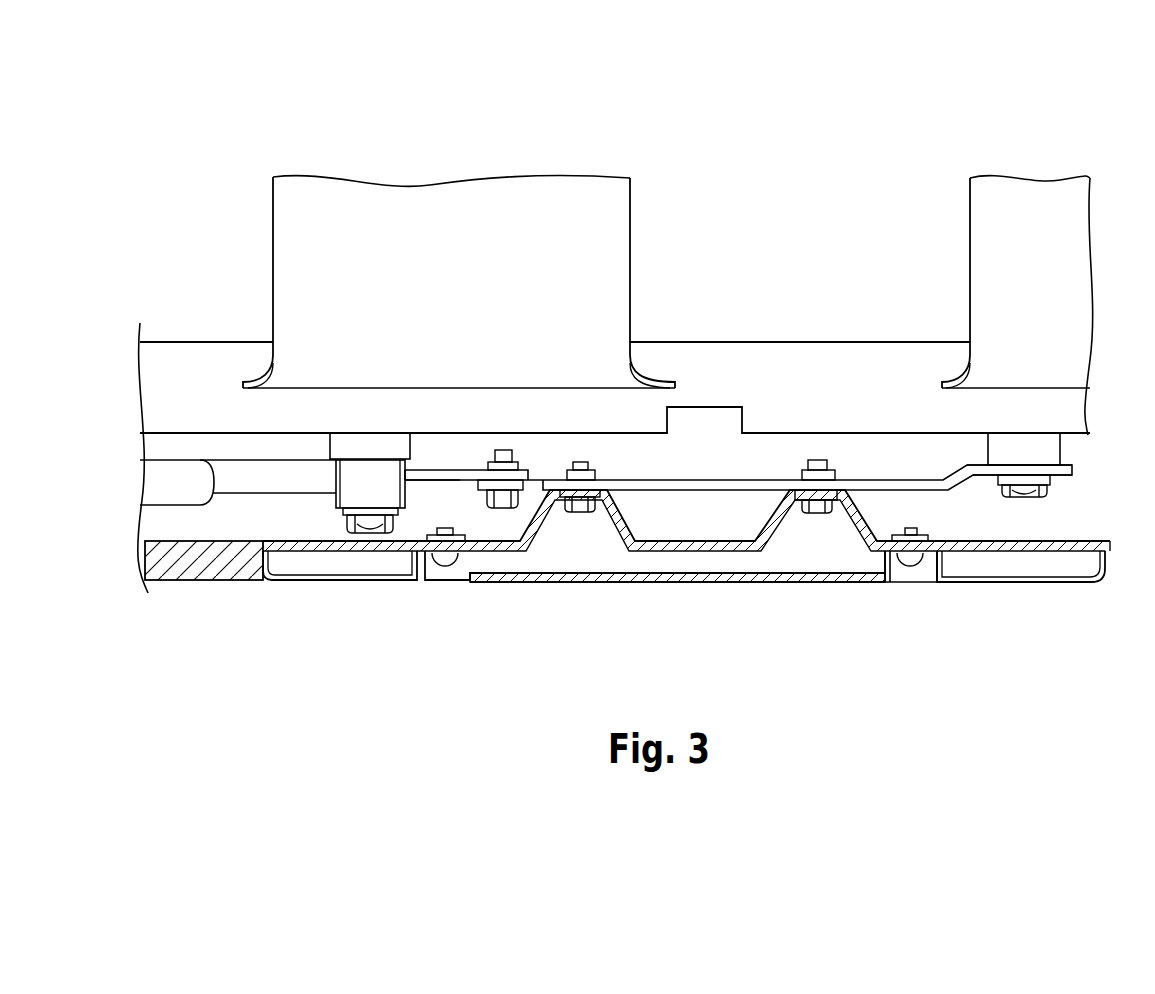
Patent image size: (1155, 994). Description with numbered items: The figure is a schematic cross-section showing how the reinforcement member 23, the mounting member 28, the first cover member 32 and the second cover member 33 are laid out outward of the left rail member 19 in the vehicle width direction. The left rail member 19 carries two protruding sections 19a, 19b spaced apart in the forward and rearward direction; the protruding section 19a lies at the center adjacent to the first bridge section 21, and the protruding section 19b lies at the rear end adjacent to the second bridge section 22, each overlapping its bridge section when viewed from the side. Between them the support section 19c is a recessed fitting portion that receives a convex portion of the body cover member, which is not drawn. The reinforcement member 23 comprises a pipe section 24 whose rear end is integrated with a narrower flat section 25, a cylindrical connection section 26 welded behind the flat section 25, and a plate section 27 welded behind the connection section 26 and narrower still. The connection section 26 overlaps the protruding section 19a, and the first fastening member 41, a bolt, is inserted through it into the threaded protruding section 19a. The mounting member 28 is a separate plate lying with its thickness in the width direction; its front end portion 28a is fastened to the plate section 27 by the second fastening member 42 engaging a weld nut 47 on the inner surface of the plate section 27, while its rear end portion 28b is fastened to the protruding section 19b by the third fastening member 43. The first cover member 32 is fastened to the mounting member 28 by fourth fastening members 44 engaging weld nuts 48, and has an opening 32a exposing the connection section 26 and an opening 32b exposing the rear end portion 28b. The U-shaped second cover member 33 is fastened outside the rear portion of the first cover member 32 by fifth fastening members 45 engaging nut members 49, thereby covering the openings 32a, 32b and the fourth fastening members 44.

The left rail member 19 is at (918, 353).
The protruding section 19a is at (358, 443).
The protruding section 19b is at (1015, 445).
The support section 19c is at (730, 407).
The first bridge section 21 is at (452, 213).
The second bridge section 22 is at (1035, 215).
The reinforcement member 23 is at (238, 448).
The pipe section 24 is at (185, 470).
The flat section 25 is at (312, 470).
The connection section 26 is at (375, 480).
The plate section 27 is at (457, 473).
The mounting member 28 is at (701, 470).
The front end portion 28a is at (547, 473).
The rear end portion 28b is at (1035, 470).
The first cover member 32 is at (680, 560).
The opening 32a is at (347, 572).
The opening 32b is at (1030, 555).
The second cover member 33 is at (638, 584).
The first fastening member 41 is at (365, 535).
The second fastening member 42 is at (490, 510).
The third fastening member 43 is at (1025, 497).
The fourth fastening member 44 is at (575, 513).
The fifth fastening member 45 is at (442, 567).
The weld nut 47 is at (515, 462).
The weld nut 48 is at (603, 470).
The nut member 49 is at (463, 530).